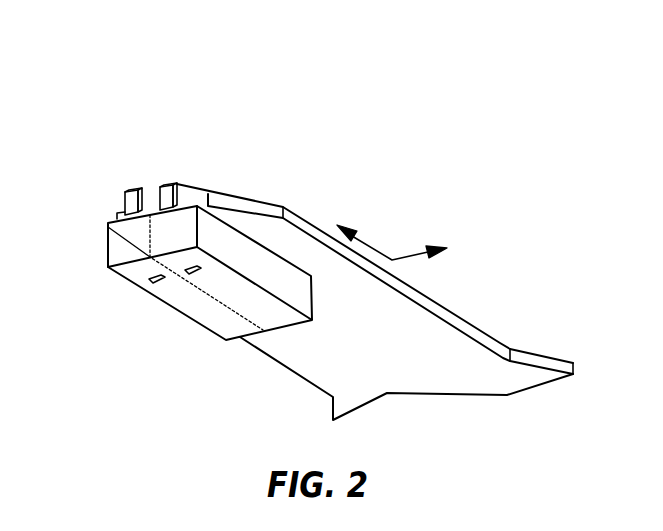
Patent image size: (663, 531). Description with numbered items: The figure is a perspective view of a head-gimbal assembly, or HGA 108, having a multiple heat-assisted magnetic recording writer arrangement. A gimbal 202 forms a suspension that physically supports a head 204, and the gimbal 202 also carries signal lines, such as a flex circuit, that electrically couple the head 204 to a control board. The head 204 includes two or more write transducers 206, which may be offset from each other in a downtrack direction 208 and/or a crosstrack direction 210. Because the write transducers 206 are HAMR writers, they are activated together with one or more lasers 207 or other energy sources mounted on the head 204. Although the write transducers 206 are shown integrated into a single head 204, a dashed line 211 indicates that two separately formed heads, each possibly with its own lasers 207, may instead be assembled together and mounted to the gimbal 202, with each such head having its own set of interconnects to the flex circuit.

The head-gimbal assembly 108 is at (358, 114).
The gimbal 202 is at (423, 376).
The head 204 is at (202, 311).
The write transducers 206 is at (192, 276).
The lasers 207 is at (165, 186).
The downtrack direction 208 is at (373, 242).
The crosstrack direction 210 is at (418, 261).
The dashed line 211 is at (108, 227).